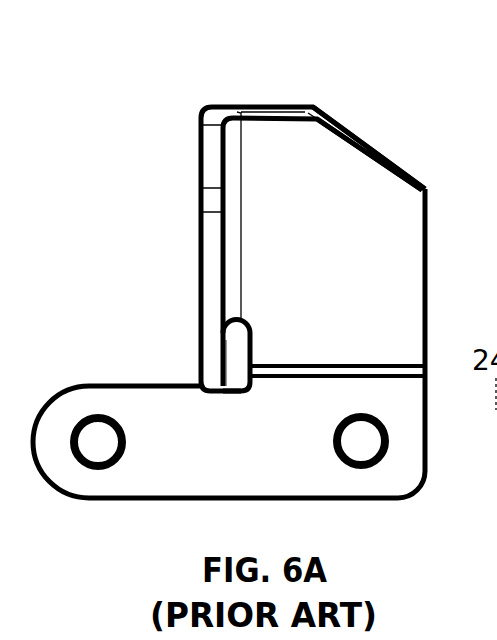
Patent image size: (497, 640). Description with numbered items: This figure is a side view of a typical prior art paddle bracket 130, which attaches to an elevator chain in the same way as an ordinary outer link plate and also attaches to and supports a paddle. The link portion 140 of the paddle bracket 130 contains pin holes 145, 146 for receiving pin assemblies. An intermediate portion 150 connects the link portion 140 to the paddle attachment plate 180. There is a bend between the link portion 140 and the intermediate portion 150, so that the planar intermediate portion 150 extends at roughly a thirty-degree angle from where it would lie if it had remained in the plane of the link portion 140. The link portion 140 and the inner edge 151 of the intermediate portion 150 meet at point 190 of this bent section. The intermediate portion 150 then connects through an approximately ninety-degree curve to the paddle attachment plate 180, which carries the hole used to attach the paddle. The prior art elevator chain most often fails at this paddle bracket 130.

The paddle bracket 130 is at (236, 311).
The paddle attachment plate 180 is at (200, 217).
The intermediate portion 150 is at (380, 200).
The inner edge 151 is at (245, 338).
The point 190 is at (240, 378).
The link portion 140 is at (229, 370).
The pin hole 145 is at (90, 437).
The pin hole 146 is at (357, 442).